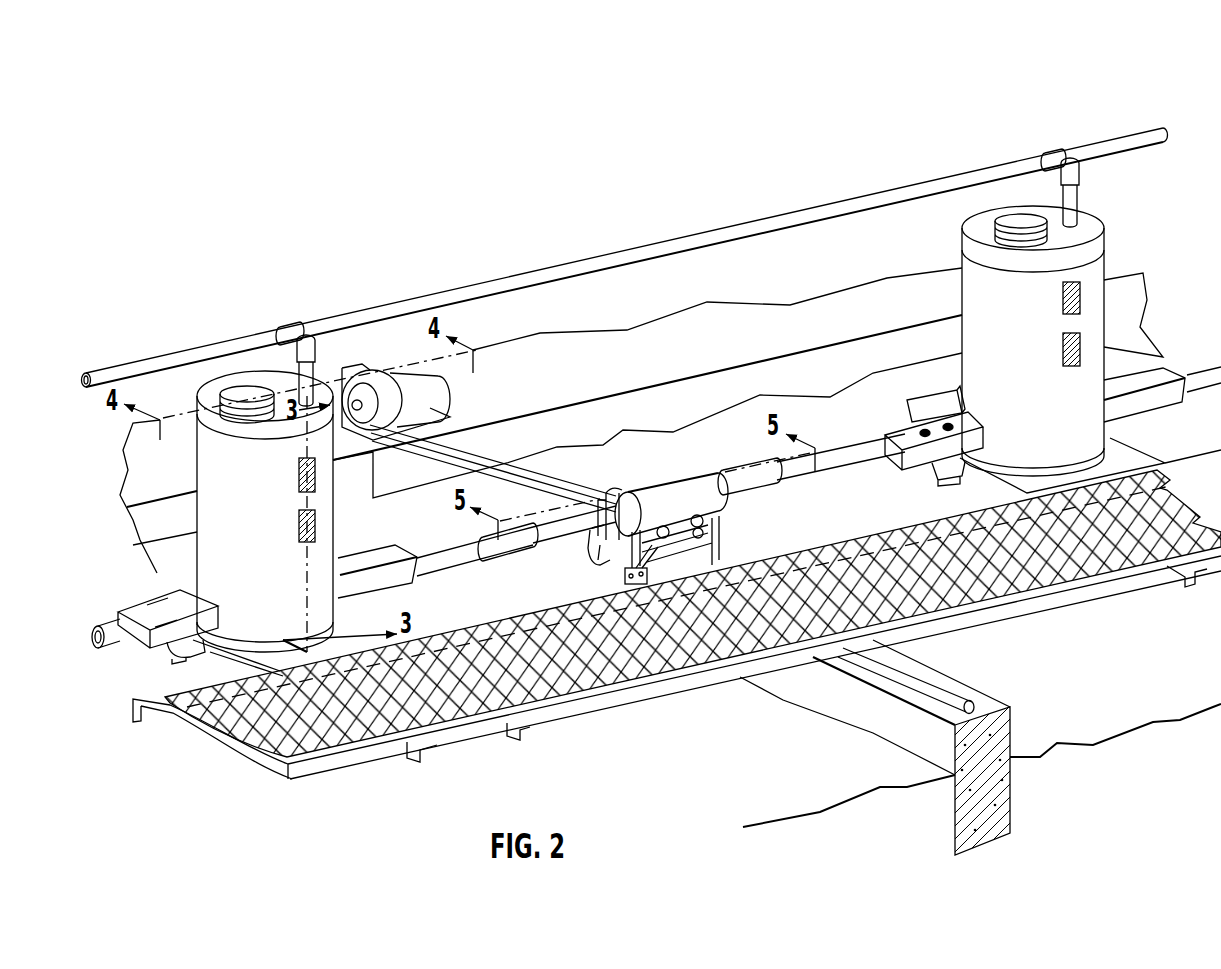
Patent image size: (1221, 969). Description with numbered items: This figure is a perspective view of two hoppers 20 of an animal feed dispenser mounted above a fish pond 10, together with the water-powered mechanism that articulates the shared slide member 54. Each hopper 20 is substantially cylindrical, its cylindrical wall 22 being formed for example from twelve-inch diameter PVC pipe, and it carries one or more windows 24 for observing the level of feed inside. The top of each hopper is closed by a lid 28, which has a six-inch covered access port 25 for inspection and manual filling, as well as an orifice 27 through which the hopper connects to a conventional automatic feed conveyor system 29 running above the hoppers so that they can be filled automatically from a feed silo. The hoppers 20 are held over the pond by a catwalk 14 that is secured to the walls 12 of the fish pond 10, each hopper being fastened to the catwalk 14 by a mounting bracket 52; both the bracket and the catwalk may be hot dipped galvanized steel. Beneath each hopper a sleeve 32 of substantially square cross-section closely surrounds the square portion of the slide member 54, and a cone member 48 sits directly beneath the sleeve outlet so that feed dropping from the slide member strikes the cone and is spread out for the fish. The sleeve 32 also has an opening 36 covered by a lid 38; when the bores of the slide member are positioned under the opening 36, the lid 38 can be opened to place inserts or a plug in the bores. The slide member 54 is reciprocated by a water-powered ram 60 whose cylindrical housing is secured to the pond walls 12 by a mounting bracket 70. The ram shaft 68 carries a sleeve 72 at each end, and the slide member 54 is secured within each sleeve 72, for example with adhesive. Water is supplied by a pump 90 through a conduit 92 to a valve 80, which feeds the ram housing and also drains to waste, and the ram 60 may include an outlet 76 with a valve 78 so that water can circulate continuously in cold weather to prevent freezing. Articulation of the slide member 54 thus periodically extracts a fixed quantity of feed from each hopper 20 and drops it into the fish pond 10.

The fish pond 10 is at (706, 775).
The walls of fish ponds 12 is at (947, 682).
The catwalk 14 is at (1080, 562).
The hopper 20 is at (641, 405).
The cylindrical wall 22 is at (243, 516).
The window 24 is at (298, 477).
The covered access port 25 is at (247, 398).
The orifice 27 is at (312, 346).
The lid 28 is at (209, 402).
The automatic feed conveyor system 29 is at (695, 240).
The sleeve 32 is at (358, 558).
The opening 36 is at (910, 427).
The lid 38 is at (176, 600).
The cone member 48 is at (185, 650).
The mounting bracket 52 is at (260, 640).
The slide member 54 is at (122, 637).
The water-powered ram 60 is at (660, 512).
The shaft 68 is at (567, 530).
The mounting bracket 70 is at (630, 573).
The sleeve 72 is at (512, 553).
The outlet 76 is at (614, 496).
The valve 78 is at (594, 553).
The valve 80 is at (710, 531).
The pump 90 is at (392, 389).
The conduit 92 is at (463, 462).